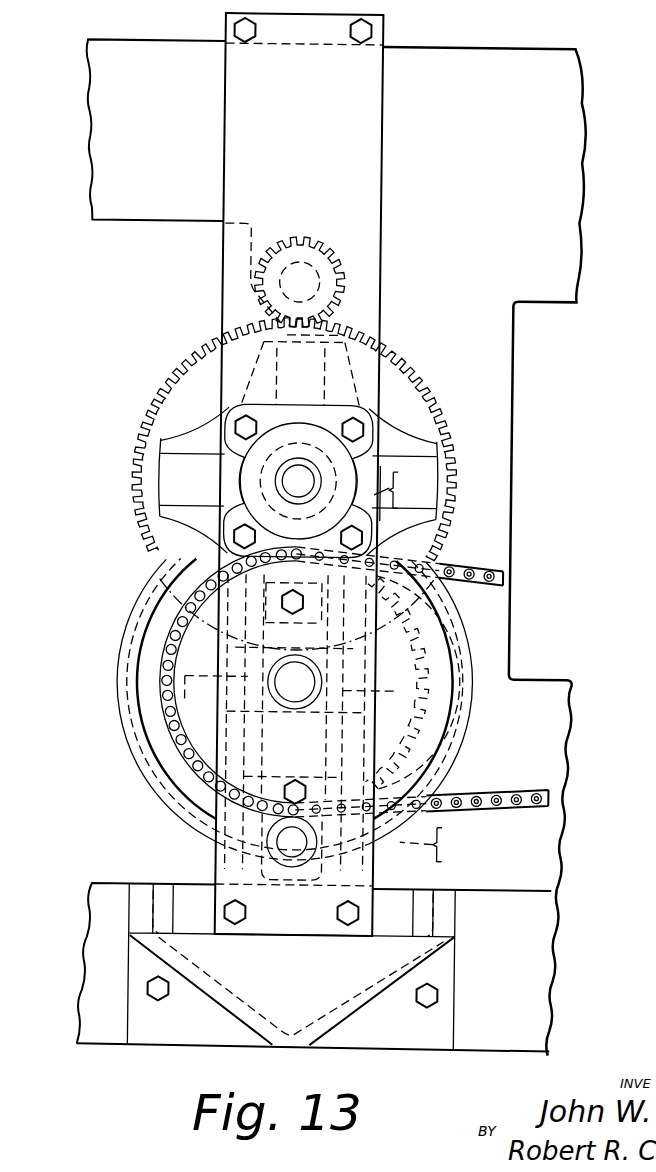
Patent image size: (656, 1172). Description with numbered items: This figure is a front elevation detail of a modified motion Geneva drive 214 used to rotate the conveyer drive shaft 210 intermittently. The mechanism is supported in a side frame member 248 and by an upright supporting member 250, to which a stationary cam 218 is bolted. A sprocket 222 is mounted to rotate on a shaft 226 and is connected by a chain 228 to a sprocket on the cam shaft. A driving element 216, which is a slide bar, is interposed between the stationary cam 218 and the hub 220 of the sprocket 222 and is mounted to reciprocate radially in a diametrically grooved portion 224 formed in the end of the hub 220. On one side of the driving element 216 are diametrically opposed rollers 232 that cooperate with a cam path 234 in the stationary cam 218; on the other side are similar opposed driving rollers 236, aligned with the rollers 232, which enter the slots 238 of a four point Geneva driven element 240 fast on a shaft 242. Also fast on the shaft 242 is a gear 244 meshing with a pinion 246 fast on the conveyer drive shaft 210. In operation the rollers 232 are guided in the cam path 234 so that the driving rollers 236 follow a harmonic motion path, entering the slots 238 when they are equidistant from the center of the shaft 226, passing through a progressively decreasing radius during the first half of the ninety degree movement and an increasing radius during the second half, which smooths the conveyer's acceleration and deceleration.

The shaft 210 is at (254, 272).
The modified motion Geneva drive 214 is at (122, 570).
The driving element 216 is at (275, 775).
The stationary cam 218 is at (472, 668).
The hub 220 is at (432, 635).
The sprocket 222 is at (167, 653).
The diametrically grooved portion 224 is at (471, 738).
The shaft 226 is at (307, 693).
The chain 228 is at (504, 574).
The rollers 232 is at (428, 663).
The cam path 234 is at (466, 564).
The driving rollers 236 is at (431, 664).
The slots 238 is at (432, 455).
The Geneva driven element 240 is at (404, 444).
The shaft 242 is at (282, 470).
The gear 244 is at (388, 354).
The pinion 246 is at (344, 284).
The side frame member 248 is at (513, 435).
The upright supporting member 250 is at (374, 157).